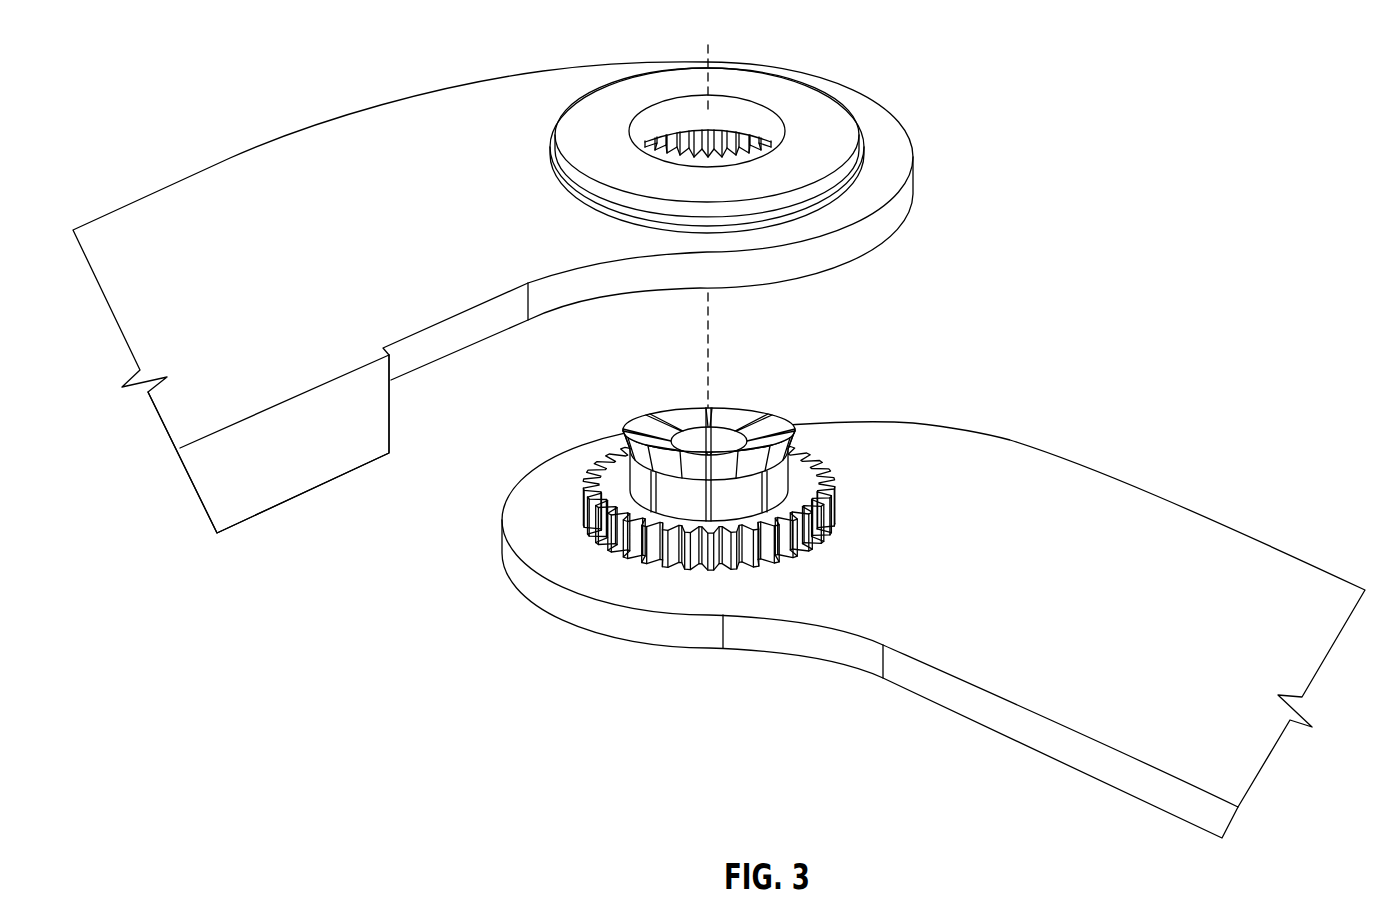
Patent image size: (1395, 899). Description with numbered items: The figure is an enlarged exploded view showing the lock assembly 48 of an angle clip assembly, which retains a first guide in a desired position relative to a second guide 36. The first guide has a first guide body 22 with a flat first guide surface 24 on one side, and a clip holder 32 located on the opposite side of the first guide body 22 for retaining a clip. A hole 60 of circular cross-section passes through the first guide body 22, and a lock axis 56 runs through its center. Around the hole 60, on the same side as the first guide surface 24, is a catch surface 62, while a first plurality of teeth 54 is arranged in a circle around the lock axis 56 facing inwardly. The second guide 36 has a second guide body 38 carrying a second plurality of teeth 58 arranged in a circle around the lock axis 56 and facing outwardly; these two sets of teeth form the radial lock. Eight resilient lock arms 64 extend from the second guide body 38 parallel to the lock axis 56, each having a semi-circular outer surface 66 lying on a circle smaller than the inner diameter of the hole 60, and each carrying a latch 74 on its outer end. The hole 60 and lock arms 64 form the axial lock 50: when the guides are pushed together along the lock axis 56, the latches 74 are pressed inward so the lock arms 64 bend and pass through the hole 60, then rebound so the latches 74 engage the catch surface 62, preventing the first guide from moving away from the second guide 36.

The first guide body 22 is at (450, 356).
The first guide surface 24 is at (328, 247).
The clip holder 32 is at (290, 490).
The second guide 36 is at (862, 663).
The second guide body 38 is at (1040, 446).
The lock assembly 48 is at (546, 269).
The axial lock 50 is at (933, 589).
The first plurality of teeth 54 is at (643, 148).
The lock axis 56 is at (710, 343).
The second plurality of teeth 58 is at (734, 502).
The hole 60 is at (660, 107).
The catch surface 62 is at (598, 112).
The resilient lock arms 64 is at (652, 428).
The outer surface 66 is at (685, 512).
The latch 74 is at (822, 458).